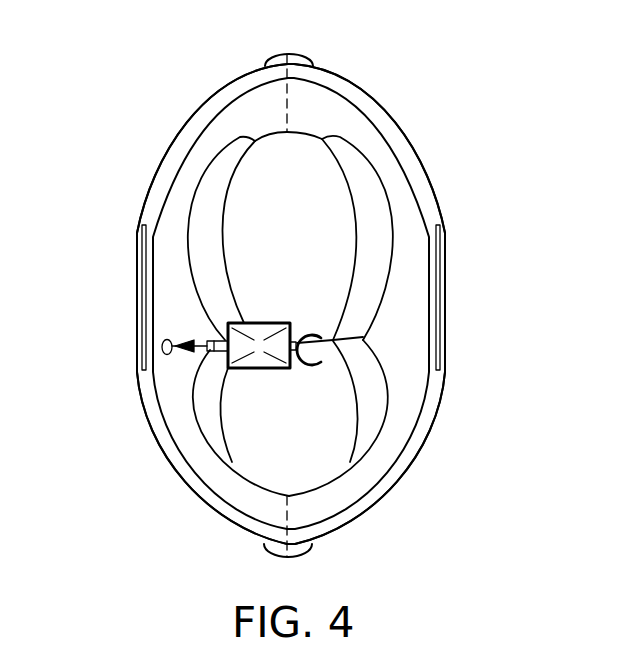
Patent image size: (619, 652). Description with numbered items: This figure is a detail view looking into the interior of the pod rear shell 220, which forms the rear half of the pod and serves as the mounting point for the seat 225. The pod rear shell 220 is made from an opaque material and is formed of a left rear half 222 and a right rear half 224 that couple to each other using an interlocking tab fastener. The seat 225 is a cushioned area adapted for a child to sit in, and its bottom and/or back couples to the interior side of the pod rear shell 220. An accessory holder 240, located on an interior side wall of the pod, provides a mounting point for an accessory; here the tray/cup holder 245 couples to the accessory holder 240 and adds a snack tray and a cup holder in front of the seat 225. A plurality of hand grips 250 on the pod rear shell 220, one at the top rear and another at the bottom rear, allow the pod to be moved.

The pod rear shell 220 is at (517, 86).
The left rear half 222 is at (386, 122).
The right rear half 224 is at (193, 123).
The seat 225 is at (236, 422).
The accessory holder 240 is at (166, 355).
The tray/cup holder 245 is at (256, 323).
The hand grips 250 is at (300, 55).